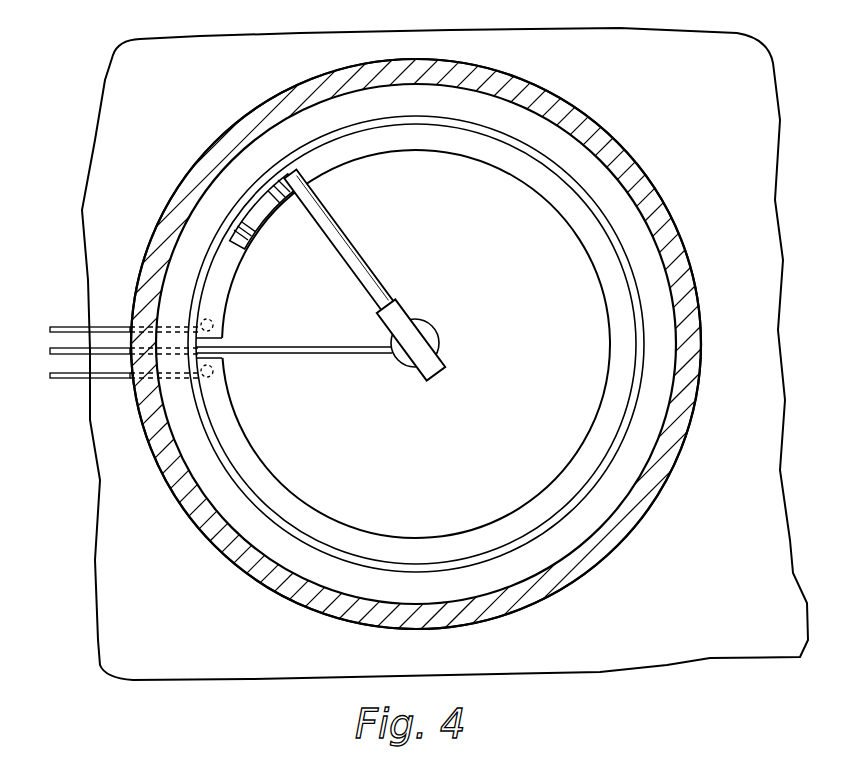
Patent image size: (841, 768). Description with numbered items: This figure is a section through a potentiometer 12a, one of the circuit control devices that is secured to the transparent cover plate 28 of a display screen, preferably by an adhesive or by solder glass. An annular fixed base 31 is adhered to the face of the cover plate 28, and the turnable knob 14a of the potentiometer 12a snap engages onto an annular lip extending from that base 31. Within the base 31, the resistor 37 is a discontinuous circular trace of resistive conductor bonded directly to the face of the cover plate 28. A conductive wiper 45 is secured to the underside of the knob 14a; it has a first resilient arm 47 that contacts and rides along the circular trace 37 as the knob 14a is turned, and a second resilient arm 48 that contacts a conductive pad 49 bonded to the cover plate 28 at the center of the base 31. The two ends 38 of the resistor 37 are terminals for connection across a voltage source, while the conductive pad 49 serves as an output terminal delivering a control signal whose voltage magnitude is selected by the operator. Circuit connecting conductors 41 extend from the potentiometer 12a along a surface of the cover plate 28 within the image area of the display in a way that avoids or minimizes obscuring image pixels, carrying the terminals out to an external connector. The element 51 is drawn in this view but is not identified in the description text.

The transparent cover plate 28 is at (708, 635).
The turnable knob 14a is at (247, 114).
The potentiometer 12a is at (234, 582).
The annular fixed base 31 is at (600, 182).
The resistor 37 is at (232, 283).
The ends of resistor 38 is at (214, 325).
The circuit connecting conductors 41 is at (74, 327).
The conductive wiper 45 is at (352, 247).
The first resilient arm 47 is at (258, 236).
The second resilient arm 48 is at (416, 306).
The conductive pad 49 is at (440, 333).
The shaft 51 is at (330, 356).